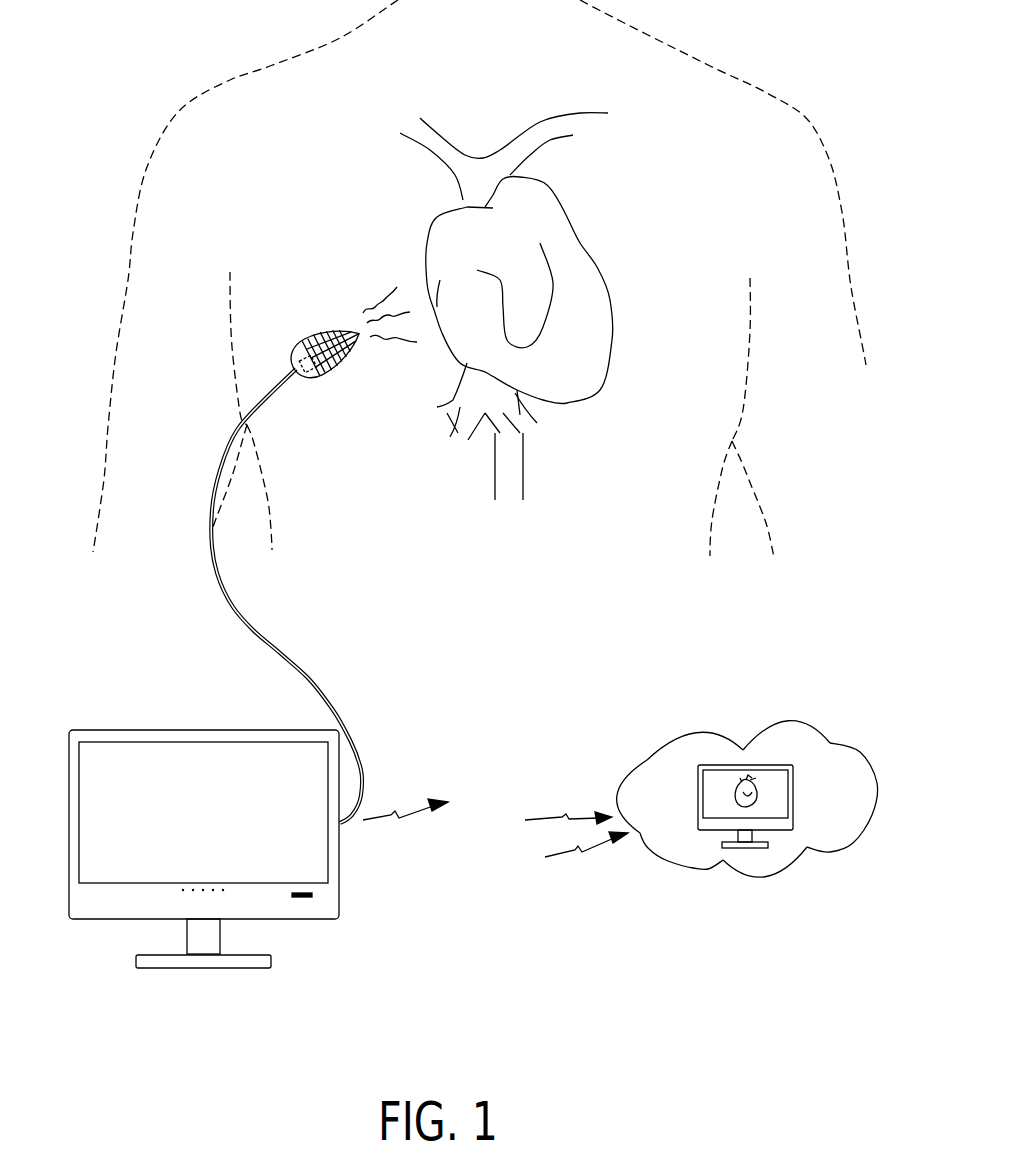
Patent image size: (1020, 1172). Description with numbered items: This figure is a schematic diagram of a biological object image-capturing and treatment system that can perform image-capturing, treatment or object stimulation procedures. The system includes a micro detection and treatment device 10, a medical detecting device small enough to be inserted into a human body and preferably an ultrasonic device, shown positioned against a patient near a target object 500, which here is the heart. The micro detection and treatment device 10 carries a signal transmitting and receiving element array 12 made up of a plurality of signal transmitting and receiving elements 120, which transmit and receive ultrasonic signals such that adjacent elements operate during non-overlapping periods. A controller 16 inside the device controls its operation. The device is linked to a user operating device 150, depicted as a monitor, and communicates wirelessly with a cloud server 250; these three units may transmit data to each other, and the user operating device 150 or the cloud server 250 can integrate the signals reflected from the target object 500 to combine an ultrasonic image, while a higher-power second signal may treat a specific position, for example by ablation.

The micro detection and treatment device 10 is at (298, 350).
The signal transmitting and receiving element array 12 is at (403, 242).
The signal transmitting and receiving elements 120 is at (373, 268).
The controller 16 is at (307, 380).
The target object 500 is at (578, 267).
The user operating device 150 is at (340, 847).
The cloud server 250 is at (753, 880).